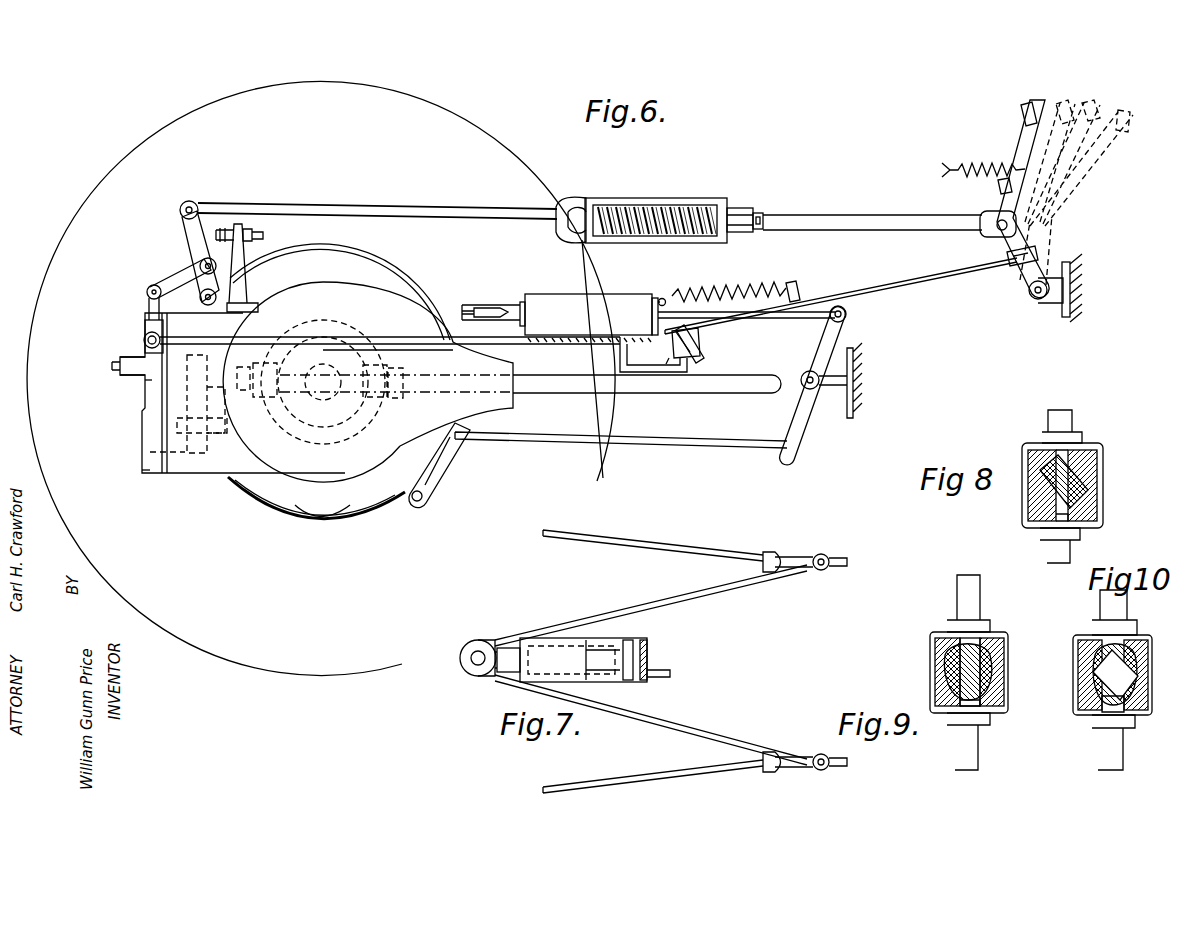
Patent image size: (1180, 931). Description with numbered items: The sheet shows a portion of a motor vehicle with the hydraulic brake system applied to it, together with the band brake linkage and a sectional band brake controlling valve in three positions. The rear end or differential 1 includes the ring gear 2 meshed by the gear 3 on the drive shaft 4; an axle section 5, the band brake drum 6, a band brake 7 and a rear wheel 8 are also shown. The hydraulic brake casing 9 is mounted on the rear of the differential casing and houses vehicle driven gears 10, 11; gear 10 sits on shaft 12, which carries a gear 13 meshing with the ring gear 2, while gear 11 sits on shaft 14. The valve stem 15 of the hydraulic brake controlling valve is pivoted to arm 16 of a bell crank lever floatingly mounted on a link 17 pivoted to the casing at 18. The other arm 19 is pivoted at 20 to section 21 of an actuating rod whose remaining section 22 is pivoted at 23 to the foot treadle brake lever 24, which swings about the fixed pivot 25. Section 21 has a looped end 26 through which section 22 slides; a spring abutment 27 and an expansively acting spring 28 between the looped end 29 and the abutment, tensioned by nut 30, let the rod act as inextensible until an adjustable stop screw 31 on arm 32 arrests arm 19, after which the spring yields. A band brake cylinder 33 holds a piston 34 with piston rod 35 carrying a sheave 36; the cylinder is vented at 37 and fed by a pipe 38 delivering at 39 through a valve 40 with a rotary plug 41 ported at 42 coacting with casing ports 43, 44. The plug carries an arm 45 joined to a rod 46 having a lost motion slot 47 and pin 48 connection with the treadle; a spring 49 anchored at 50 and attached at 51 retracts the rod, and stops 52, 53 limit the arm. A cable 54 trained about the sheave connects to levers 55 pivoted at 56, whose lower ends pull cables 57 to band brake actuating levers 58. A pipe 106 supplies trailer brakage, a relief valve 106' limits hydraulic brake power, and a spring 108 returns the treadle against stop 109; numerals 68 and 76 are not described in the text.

In FIG. 6, the rear end or differential 1 is at (343, 462).
In FIG. 6, the ring gear 2 is at (343, 446).
In FIG. 6, the gear 3 is at (375, 405).
In FIG. 6, the drive shaft 4 is at (592, 392).
In FIG. 6, the axle section 5 is at (340, 385).
In FIG. 6, the band brake drum 6 is at (290, 490).
In FIG. 6, the band brake 7 is at (375, 504).
In FIG. 6, the rear wheel 8 is at (205, 653).
In FIG. 6, the hydraulic brake casing 9 is at (228, 470).
In FIG. 6, the vehicle driven gear 10 is at (148, 380).
In FIG. 6, the vehicle driven gear 11 is at (148, 455).
In FIG. 6, the shaft 12 is at (209, 405).
In FIG. 6, the gear 13 is at (260, 409).
In FIG. 6, the shaft 14 is at (153, 427).
In FIG. 6, the valve stem 15 is at (149, 305).
In FIG. 6, the arm of bell crank lever 16 is at (180, 282).
In FIG. 6, the link 17 is at (203, 276).
In FIG. 6, the pivot 18 is at (208, 305).
In FIG. 6, the arm of bell crank lever 19 is at (184, 232).
In FIG. 6, the pivot 20 is at (189, 201).
In FIG. 6, the actuating rod section 21 is at (362, 205).
In FIG. 6, the actuating rod section 22 is at (828, 216).
In FIG. 6, the pivot 23 is at (998, 230).
In FIG. 6, the foot treadle brake lever 24 is at (1023, 147).
In FIG. 6, the pivot 25 is at (1035, 300).
In FIG. 6, the looped end 26 is at (656, 199).
In FIG. 6, the spring abutment 27 is at (587, 203).
In FIG. 6, the spring 28 is at (636, 236).
In FIG. 6, the looped end 29 is at (738, 208).
In FIG. 6, the nut 30 is at (760, 213).
In FIG. 6, the adjustable stop screw 31 is at (263, 236).
In FIG. 6, the arm 32 is at (258, 288).
In FIG. 6, the band brake cylinder 33 is at (560, 294).
In FIG. 7, the band brake cylinder 33 is at (636, 682).
In FIG. 7, the piston 34 is at (633, 650).
In FIG. 7, the piston rod 35 is at (600, 652).
In FIG. 6, the sheave or pulley 36 is at (476, 304).
In FIG. 7, the sheave or pulley 36 is at (466, 670).
In FIG. 7, the vent 37 is at (508, 636).
In FIG. 6, the pipe 38 is at (368, 382).
In FIG. 7, the pipe 38 is at (672, 674).
In FIG. 8, the pipe 38 is at (1050, 553).
In FIG. 9, the pipe 38 is at (978, 752).
In FIG. 10, the pipe 38 is at (1103, 750).
In FIG. 7, the delivery point 39 is at (650, 665).
In FIG. 6, the valve 40 is at (700, 340).
In FIG. 8, the valve 40 is at (1103, 455).
In FIG. 9, the valve 40 is at (1000, 632).
In FIG. 8, the rotary plug 41 is at (1097, 472).
In FIG. 9, the rotary plug 41 is at (940, 670).
In FIG. 10, the rotary plug 41 is at (1090, 682).
In FIG. 8, the port 42 is at (1078, 495).
In FIG. 9, the port 42 is at (980, 672).
In FIG. 10, the port 42 is at (1092, 690).
In FIG. 8, the port 43 is at (1028, 460).
In FIG. 9, the port 43 is at (935, 646).
In FIG. 10, the port 43 is at (1078, 648).
In FIG. 8, the port 44 is at (1030, 516).
In FIG. 9, the port 44 is at (960, 708).
In FIG. 10, the port 44 is at (1100, 712).
In FIG. 6, the arm 45 is at (676, 336).
In FIG. 6, the rod 46 is at (862, 291).
In FIG. 6, the slot 47 is at (1036, 256).
In FIG. 6, the pin 48 is at (1010, 265).
In FIG. 6, the spring 49 is at (712, 289).
In FIG. 6, the fixed connection point 50 is at (662, 298).
In FIG. 6, the connection point 51 is at (793, 283).
In FIG. 6, the stop 52 is at (704, 352).
In FIG. 6, the stop 53 is at (668, 360).
In FIG. 6, the cable 54 is at (610, 300).
In FIG. 7, the cable 54 is at (688, 732).
In FIG. 6, the lever 55 is at (842, 320).
In FIG. 7, the lever 55 is at (840, 760).
In FIG. 6, the pivot 56 is at (813, 390).
In FIG. 6, the cable 57 is at (553, 443).
In FIG. 7, the cable 57 is at (622, 760).
In FIG. 6, the band brake actuating lever 58 is at (440, 467).
In FIG. 6, the housing base 68 is at (142, 474).
In FIG. 6, the bracket 76 is at (145, 321).
In FIG. 6, the pipe 106 is at (387, 352).
In FIG. 6, the relief valve 106' is at (111, 370).
In FIG. 6, the spring 108 is at (960, 165).
In FIG. 6, the stop 109 is at (999, 187).